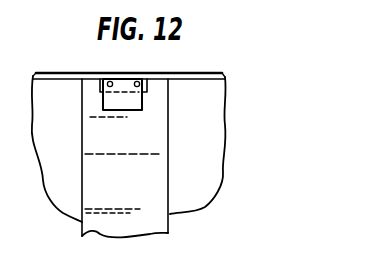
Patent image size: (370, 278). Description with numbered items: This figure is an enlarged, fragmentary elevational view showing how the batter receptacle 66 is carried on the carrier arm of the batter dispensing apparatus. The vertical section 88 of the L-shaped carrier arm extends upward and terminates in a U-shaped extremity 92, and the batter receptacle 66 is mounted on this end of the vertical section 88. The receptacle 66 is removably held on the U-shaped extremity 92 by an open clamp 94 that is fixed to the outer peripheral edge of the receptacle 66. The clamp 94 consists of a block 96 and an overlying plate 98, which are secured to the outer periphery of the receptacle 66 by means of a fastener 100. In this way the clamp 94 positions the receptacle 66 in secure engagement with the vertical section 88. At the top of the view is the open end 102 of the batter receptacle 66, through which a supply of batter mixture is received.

The batter receptacle 66 is at (224, 140).
The vertical section 88 is at (170, 128).
The U-shaped extremity 92 is at (142, 78).
The open clamp 94 is at (113, 97).
The block 96 is at (136, 88).
The overlying plate 98 is at (123, 103).
The fastener 100 is at (112, 80).
The open end 102 is at (220, 73).